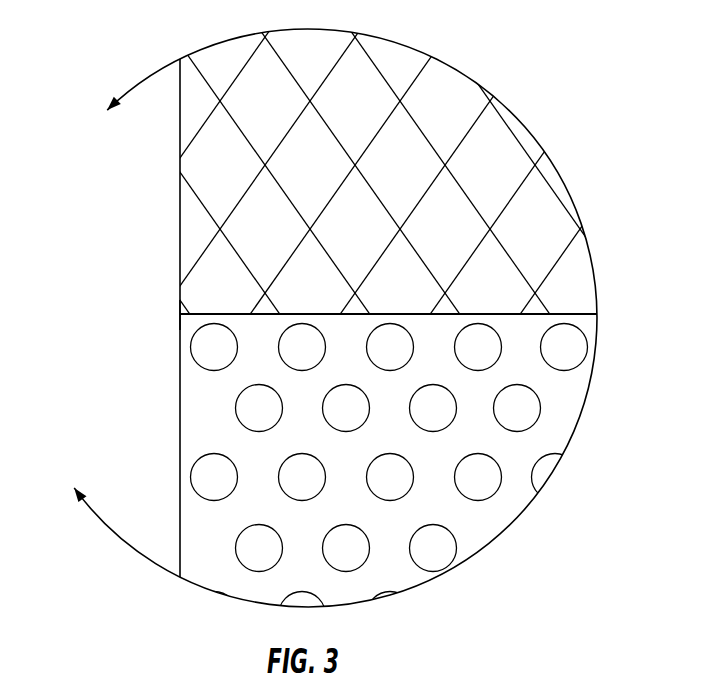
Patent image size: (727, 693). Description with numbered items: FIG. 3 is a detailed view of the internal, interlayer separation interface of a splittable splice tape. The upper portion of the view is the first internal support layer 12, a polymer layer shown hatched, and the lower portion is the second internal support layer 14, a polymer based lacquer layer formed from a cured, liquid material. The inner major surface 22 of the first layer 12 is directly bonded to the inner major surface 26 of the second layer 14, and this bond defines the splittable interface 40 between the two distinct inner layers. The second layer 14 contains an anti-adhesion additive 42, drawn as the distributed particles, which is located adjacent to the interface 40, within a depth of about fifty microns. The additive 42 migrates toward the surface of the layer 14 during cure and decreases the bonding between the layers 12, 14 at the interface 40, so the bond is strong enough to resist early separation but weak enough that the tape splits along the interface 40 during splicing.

The first internal support layer 12 is at (200, 107).
The second internal support layer 14 is at (207, 540).
The inner major surface 22 is at (582, 304).
The inner major surface 26 is at (529, 326).
The splittable interface 40 is at (156, 310).
The anti-adhesion additive 42 is at (303, 469).